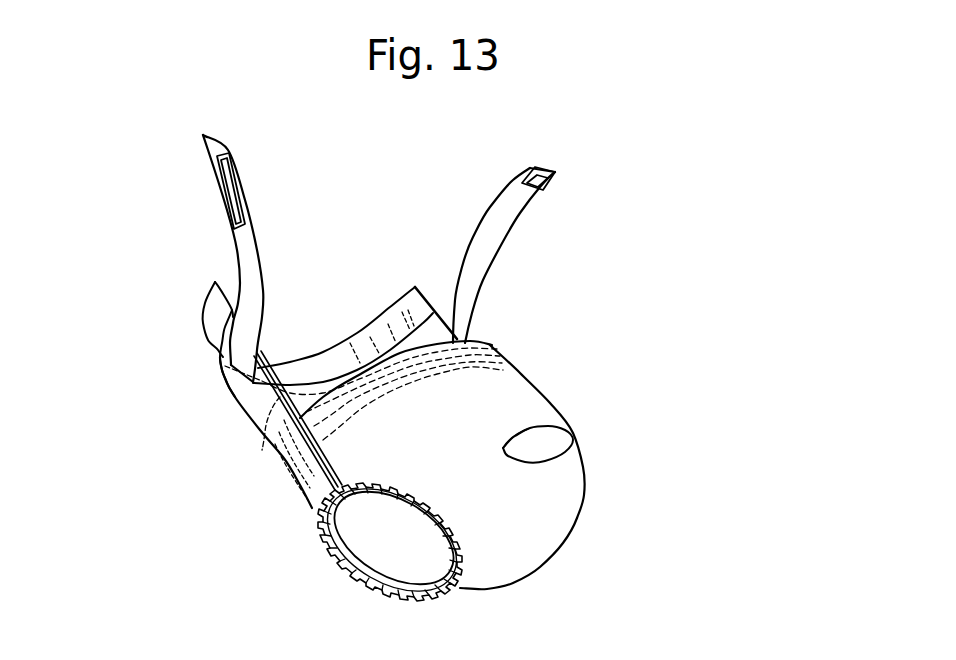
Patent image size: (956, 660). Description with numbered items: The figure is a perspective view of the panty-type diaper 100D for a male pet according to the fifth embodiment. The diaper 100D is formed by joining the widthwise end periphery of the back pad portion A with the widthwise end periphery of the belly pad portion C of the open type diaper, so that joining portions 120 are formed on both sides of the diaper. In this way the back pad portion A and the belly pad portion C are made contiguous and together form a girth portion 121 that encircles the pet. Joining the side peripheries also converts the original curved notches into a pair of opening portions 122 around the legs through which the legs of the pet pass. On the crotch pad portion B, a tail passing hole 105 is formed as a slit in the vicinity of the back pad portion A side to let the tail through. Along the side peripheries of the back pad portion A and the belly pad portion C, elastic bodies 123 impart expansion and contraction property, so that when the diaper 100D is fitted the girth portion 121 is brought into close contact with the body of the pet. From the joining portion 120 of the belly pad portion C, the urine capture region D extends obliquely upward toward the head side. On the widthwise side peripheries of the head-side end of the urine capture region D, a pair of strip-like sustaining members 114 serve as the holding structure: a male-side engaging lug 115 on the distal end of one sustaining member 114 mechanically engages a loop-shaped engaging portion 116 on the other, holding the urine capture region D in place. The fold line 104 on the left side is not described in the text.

The panty-type diaper for a male pet 100D is at (748, 168).
The sustaining member 114 is at (244, 243).
The male-side engaging lug 115 is at (523, 176).
The loop-shaped engaging portion 116 is at (231, 190).
The girth portion 121 is at (462, 342).
The elastic body 123 is at (486, 336).
The tail passing hole 105 is at (521, 430).
The fold line 104 is at (263, 434).
The joining portion 120 is at (305, 498).
The opening portion around legs 122 is at (387, 551).
The back pad portion A is at (507, 380).
The crotch pad portion B is at (573, 473).
The belly pad portion C is at (296, 478).
The urine capture region D is at (235, 392).